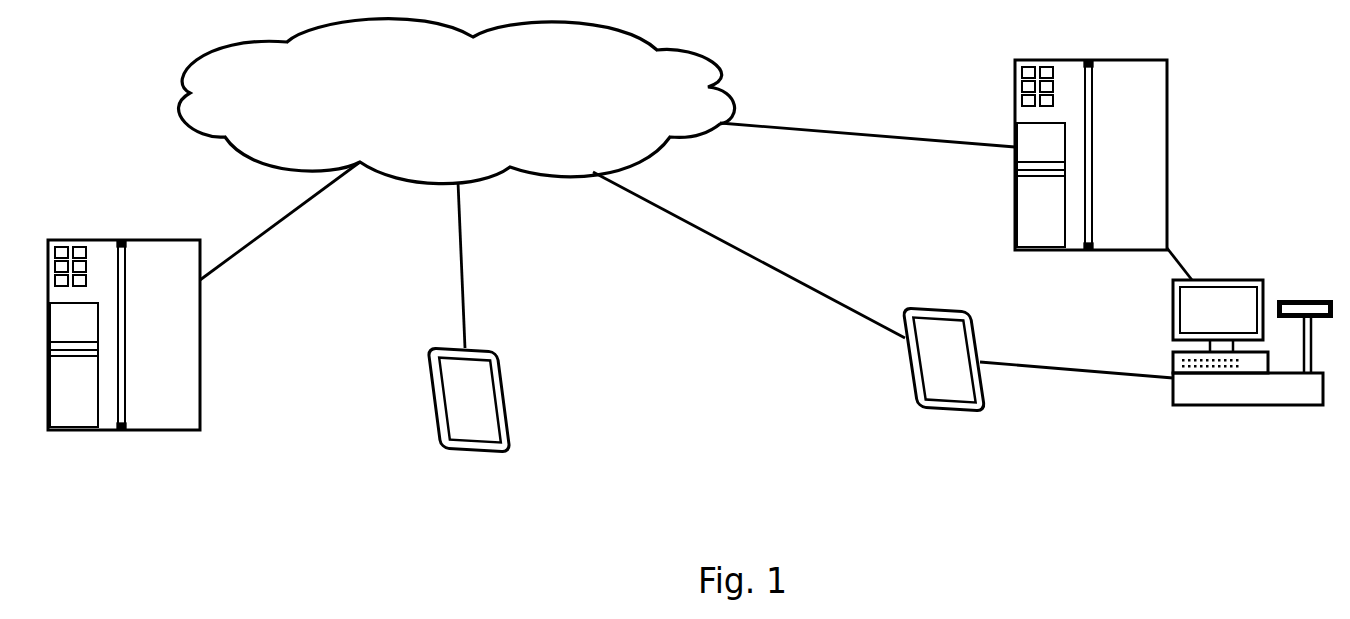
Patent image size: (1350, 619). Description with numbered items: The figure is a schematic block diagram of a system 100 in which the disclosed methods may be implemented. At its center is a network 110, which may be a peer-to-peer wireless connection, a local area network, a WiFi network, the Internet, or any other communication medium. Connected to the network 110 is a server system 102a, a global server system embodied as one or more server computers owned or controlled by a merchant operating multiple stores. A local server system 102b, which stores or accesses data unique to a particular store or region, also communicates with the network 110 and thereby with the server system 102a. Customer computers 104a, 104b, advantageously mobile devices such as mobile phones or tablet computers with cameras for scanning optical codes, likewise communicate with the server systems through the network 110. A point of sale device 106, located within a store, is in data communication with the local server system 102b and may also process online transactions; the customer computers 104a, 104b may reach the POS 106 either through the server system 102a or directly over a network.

The system 100 is at (112, 98).
The network 110 is at (520, 114).
The server system 102a is at (193, 324).
The local server system 102b is at (1158, 144).
The customer computer 104a is at (942, 308).
The customer computer 104b is at (435, 397).
The point of sale device 106 is at (1242, 324).